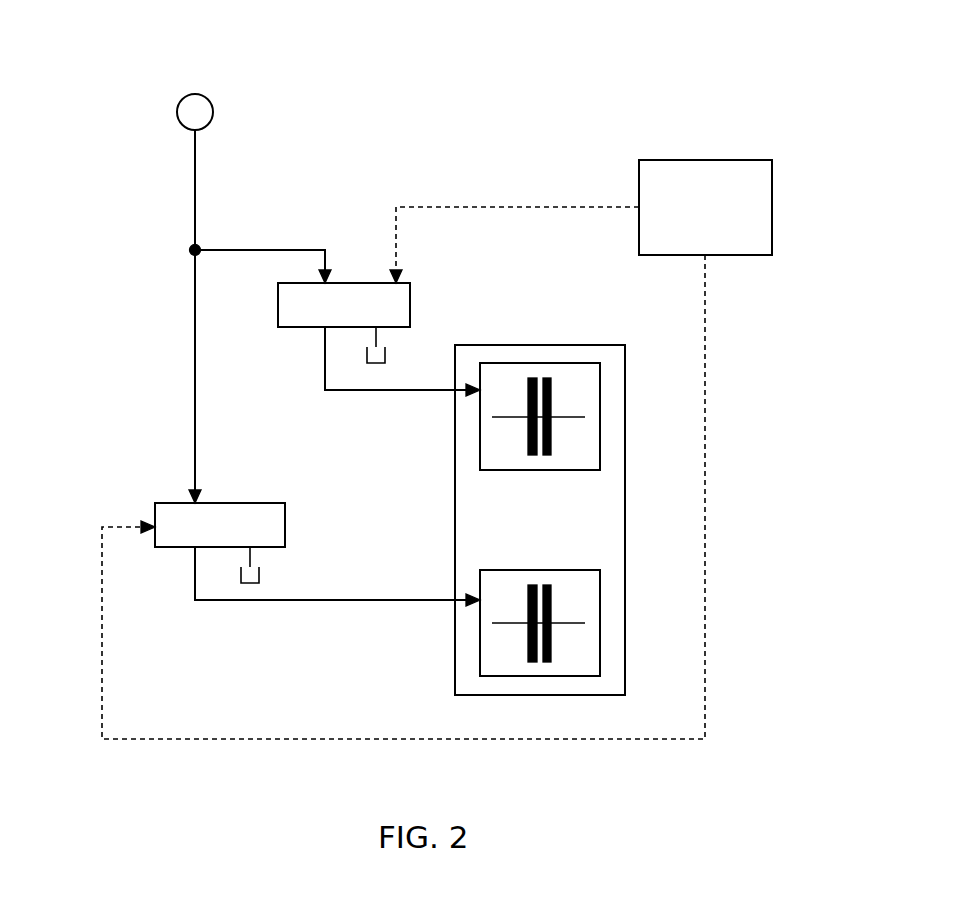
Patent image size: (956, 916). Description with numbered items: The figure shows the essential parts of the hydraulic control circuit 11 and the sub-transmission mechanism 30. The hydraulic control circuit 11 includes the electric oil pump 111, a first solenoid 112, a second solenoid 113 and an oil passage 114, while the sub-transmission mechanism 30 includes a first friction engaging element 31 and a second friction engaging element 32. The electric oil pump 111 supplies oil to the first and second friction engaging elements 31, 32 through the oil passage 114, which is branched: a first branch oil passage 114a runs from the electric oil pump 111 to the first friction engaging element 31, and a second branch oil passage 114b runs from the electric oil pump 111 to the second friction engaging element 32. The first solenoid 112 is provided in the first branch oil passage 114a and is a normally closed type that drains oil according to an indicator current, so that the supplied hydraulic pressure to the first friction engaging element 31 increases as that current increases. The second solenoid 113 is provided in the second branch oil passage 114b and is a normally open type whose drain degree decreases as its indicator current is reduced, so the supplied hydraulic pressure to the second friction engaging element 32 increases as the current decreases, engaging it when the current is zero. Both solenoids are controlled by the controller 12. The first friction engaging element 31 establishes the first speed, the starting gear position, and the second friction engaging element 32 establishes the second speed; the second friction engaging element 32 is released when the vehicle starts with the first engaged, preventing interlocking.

The hydraulic control circuit 11 is at (278, 67).
The electric oil pump 111 is at (177, 112).
The oil passage 114 is at (195, 192).
The first branch oil passage 114a is at (300, 248).
The second branch oil passage 114b is at (195, 333).
The first solenoid 112 is at (410, 303).
The second solenoid 113 is at (285, 524).
The controller 12 is at (704, 160).
The sub-transmission mechanism 30 is at (538, 345).
The first friction engaging element 31 is at (600, 380).
The second friction engaging element 32 is at (600, 585).